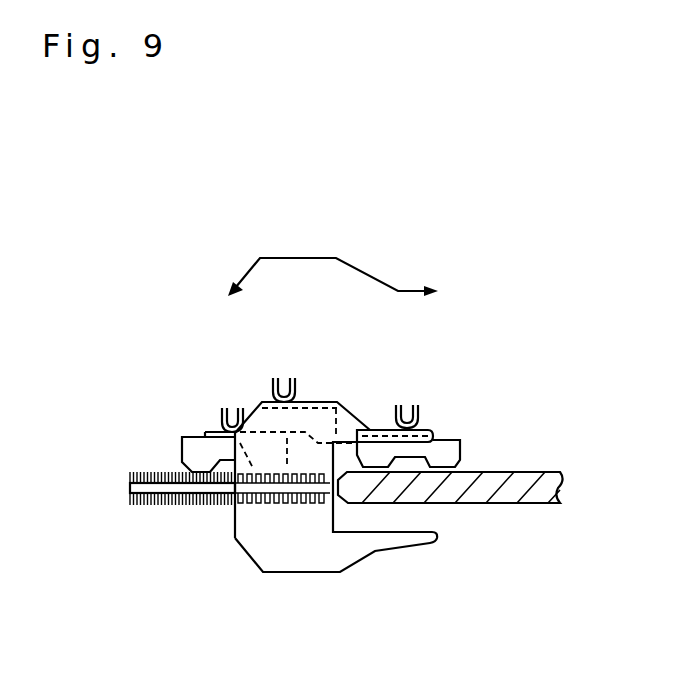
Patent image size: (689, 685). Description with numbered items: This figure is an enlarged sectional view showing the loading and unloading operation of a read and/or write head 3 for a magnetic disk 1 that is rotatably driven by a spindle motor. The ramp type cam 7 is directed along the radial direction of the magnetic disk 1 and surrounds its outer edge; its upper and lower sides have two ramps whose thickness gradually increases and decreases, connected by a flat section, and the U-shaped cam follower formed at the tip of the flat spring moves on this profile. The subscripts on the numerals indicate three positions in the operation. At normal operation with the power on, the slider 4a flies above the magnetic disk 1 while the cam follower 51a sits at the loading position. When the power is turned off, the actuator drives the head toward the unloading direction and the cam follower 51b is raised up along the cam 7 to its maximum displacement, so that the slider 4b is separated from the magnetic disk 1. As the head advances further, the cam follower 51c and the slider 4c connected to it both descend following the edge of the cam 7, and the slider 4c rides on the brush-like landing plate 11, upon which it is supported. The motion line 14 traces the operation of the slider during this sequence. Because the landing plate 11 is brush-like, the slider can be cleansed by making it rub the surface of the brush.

The magnetic disk 1 is at (533, 480).
The read and/or write head 3 is at (445, 404).
The slider 4a is at (460, 457).
The slider 4b is at (265, 400).
The slider 4c is at (188, 453).
The ramp type cam 7 is at (365, 421).
The brush-like landing plate 11 is at (130, 488).
The motion line 14 is at (343, 261).
The cam follower 51a is at (420, 418).
The cam follower 51b is at (297, 392).
The cam follower 51c is at (223, 420).